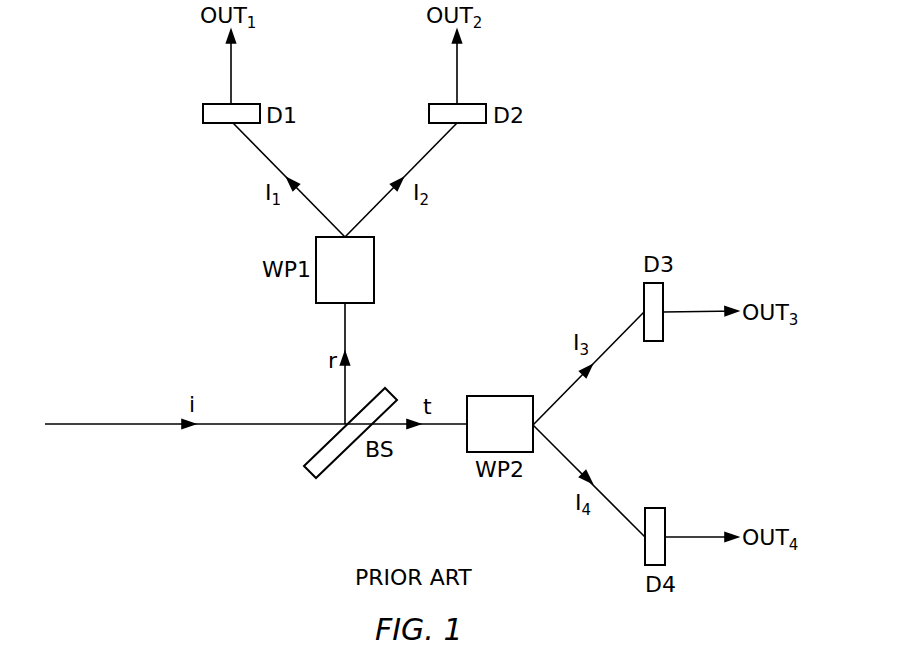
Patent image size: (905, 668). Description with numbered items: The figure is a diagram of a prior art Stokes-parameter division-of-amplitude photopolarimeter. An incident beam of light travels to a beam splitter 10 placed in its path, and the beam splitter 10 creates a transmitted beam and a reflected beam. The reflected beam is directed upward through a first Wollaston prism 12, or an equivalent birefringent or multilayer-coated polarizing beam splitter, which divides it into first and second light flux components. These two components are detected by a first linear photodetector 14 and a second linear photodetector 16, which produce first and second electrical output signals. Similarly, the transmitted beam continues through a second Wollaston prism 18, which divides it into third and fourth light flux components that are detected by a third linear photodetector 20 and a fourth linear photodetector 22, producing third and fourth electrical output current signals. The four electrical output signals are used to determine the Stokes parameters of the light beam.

The beam splitter 10 is at (310, 478).
The first Wollaston prism 12 is at (374, 258).
The first linear photodetector 14 is at (203, 113).
The second linear photodetector 16 is at (429, 113).
The second Wollaston prism 18 is at (502, 396).
The third linear photodetector 20 is at (663, 333).
The fourth linear photodetector 22 is at (665, 515).